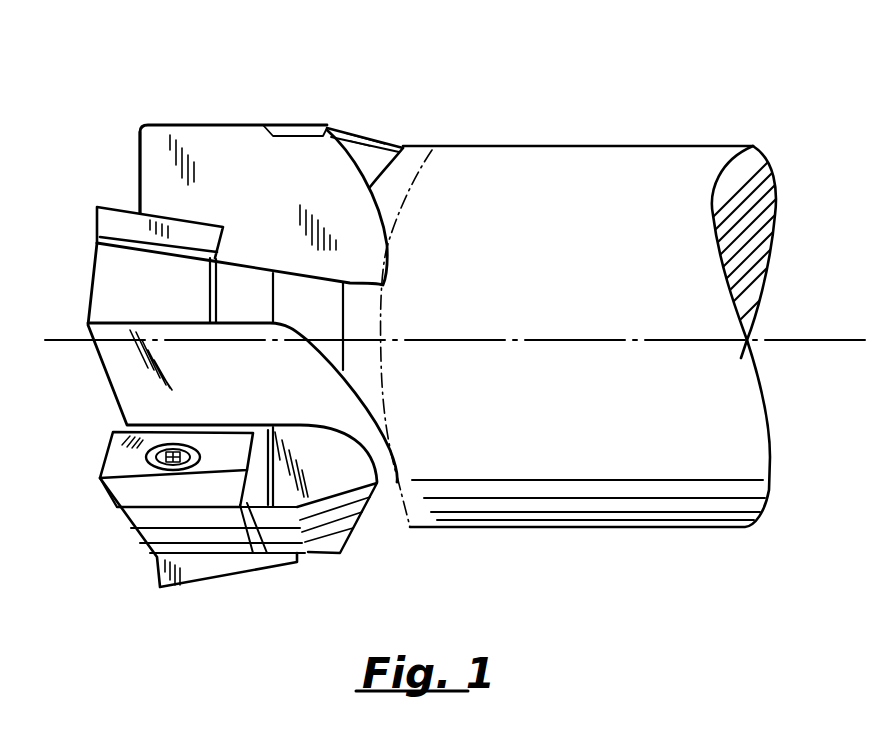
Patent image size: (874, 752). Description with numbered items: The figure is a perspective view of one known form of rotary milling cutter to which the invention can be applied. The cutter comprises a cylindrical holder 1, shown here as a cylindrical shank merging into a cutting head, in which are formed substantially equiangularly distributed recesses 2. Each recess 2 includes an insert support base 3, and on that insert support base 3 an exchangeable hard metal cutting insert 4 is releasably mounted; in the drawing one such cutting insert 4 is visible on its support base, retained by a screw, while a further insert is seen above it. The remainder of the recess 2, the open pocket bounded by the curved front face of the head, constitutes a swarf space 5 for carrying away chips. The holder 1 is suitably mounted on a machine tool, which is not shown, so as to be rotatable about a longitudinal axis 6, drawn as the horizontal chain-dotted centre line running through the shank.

The cylindrical holder 1 is at (372, 121).
The recess 2 is at (126, 137).
The insert support base 3 is at (108, 273).
The cutting insert 4 is at (108, 217).
The swarf space 5 is at (233, 178).
The longitudinal axis 6 is at (850, 338).